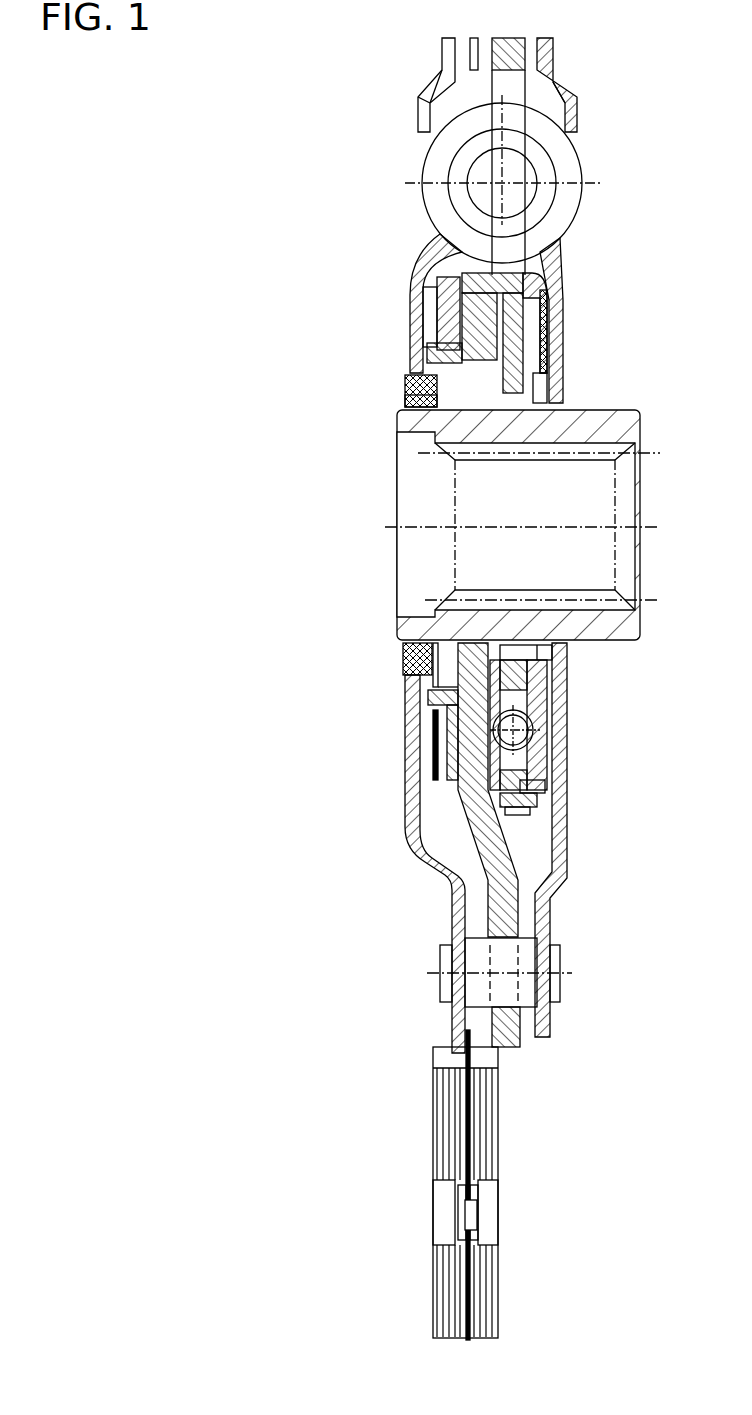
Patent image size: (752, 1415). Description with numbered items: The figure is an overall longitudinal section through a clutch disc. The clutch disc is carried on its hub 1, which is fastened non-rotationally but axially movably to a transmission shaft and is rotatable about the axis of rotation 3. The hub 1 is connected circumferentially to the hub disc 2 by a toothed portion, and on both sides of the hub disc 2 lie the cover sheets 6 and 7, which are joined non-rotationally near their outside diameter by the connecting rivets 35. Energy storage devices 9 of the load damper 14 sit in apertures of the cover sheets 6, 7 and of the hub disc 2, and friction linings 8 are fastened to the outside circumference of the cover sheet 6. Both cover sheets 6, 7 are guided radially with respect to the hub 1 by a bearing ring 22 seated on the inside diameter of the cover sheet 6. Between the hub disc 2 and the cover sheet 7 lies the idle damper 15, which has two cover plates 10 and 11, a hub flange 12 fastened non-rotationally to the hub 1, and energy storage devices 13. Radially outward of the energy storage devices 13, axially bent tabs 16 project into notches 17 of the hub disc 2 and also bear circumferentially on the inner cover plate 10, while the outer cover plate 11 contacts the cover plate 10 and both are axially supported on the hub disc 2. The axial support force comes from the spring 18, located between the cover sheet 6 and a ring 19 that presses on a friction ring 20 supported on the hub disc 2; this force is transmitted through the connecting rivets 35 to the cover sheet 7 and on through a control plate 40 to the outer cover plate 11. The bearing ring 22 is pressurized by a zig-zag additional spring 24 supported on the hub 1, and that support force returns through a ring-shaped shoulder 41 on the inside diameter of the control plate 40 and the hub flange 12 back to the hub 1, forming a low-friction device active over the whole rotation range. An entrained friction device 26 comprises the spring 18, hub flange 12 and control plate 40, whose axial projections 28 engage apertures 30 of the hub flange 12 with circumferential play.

The hub 1 is at (538, 432).
The hub disc 2 is at (447, 333).
The axis of rotation 3 is at (395, 525).
The cover sheet 6 is at (415, 762).
The cover sheet 7 is at (555, 792).
The friction linings 8 is at (492, 1262).
The energy storage devices 9 is at (437, 162).
The cover plate 10 is at (463, 798).
The cover plate 11 is at (555, 813).
The hub flange 12 is at (552, 655).
The energy storage devices 13 is at (550, 727).
The load damper 14 is at (590, 178).
The idle damper 15 is at (550, 700).
The tabs 16 is at (563, 235).
The notches 17 is at (430, 243).
The spring 18 is at (435, 303).
The ring 19 is at (430, 318).
The friction ring 20 is at (425, 290).
The bearing ring 22 is at (422, 415).
The additional spring 24 is at (412, 398).
The entrained friction device 26 is at (554, 308).
The projections 28 is at (537, 800).
The apertures 30 is at (530, 793).
The connecting rivets 35 is at (543, 960).
The control plate 40 is at (560, 335).
The shoulder 41 is at (548, 372).